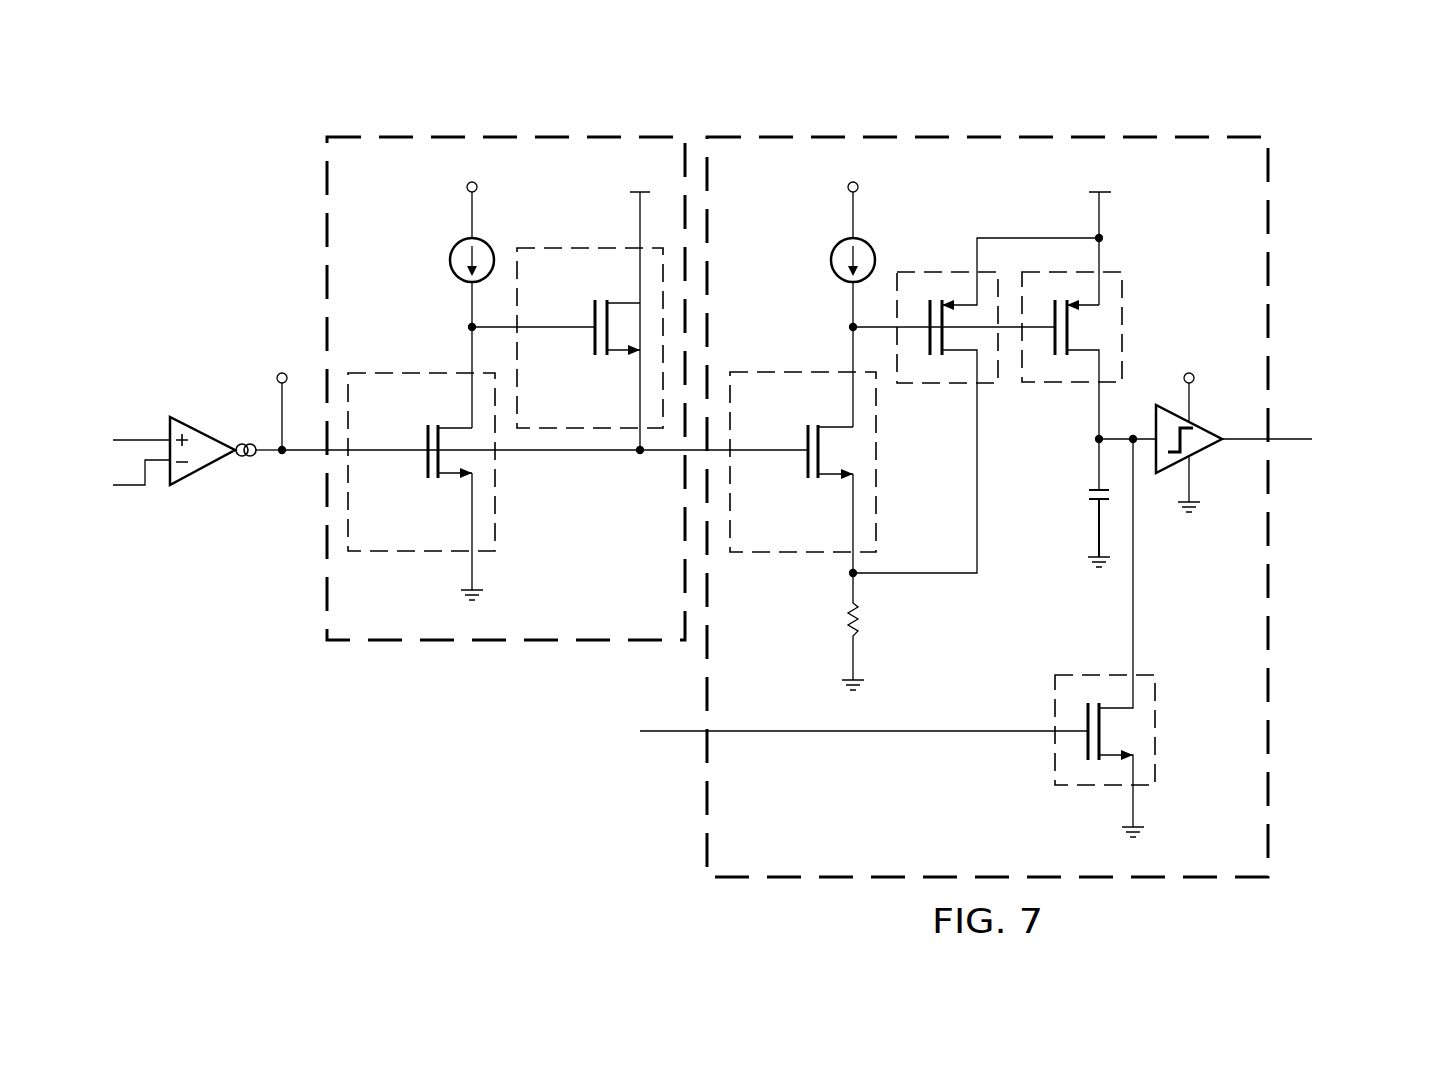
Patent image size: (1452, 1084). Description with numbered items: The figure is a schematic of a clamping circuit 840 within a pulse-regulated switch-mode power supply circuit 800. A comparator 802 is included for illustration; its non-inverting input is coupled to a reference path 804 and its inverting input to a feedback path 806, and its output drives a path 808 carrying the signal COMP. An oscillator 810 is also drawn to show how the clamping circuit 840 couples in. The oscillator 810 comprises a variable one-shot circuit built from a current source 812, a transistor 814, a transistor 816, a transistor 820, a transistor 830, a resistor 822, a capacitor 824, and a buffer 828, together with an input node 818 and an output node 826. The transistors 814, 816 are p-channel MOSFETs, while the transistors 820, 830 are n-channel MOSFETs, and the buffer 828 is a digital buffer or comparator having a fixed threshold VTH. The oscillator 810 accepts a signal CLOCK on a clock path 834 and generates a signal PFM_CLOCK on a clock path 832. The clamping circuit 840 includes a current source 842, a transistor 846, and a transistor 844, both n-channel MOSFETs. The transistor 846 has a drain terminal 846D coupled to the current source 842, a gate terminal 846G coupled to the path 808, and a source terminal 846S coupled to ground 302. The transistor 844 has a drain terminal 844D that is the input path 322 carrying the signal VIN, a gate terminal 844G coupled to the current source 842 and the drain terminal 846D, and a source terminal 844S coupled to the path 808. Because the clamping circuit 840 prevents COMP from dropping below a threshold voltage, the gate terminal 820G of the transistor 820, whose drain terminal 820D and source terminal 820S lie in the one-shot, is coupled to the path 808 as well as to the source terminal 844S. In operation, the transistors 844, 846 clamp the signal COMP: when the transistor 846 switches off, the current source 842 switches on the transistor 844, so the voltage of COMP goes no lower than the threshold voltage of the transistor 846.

The pulse-regulated switch-mode power supply circuit 800 is at (165, 167).
The comparator 802 is at (203, 472).
The reference path 804 is at (142, 438).
The feedback path 806 is at (128, 488).
The path 808 is at (280, 420).
The oscillator 810 is at (1045, 128).
The current source 812 is at (830, 260).
The transistor 814 is at (932, 262).
The transistor 816 is at (1132, 298).
The input node 818 is at (848, 325).
The transistor 820 is at (844, 450).
The drain terminal 820D is at (853, 416).
The gate terminal 820G is at (808, 457).
The source terminal 820S is at (852, 486).
The resistor 822 is at (860, 620).
The capacitor 824 is at (1090, 497).
The output node 826 is at (1095, 437).
The buffer 828 is at (1206, 424).
The transistor 830 is at (1166, 768).
The clock path 832 is at (1288, 437).
The clock path 834 is at (672, 736).
The clamping circuit 840 is at (450, 128).
The current source 842 is at (450, 260).
The transistor 844 is at (581, 304).
The drain terminal 844D is at (640, 292).
The gate terminal 844G is at (594, 334).
The source terminal 844S is at (640, 366).
The transistor 846 is at (421, 475).
The drain terminal 846D is at (472, 414).
The gate terminal 846G is at (428, 457).
The source terminal 846S is at (470, 486).
The ground 302 is at (485, 598).
The input path 322 is at (638, 222).